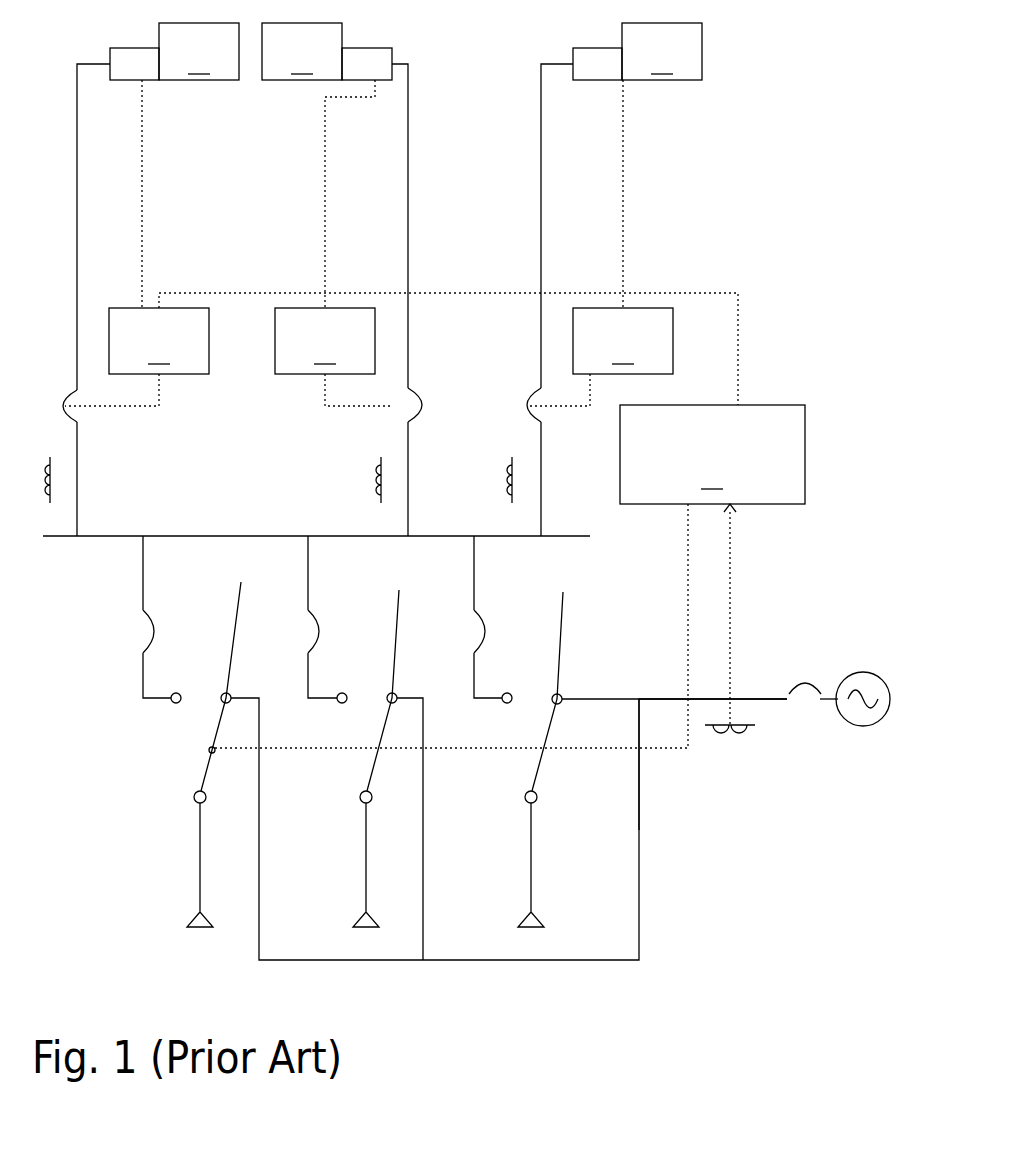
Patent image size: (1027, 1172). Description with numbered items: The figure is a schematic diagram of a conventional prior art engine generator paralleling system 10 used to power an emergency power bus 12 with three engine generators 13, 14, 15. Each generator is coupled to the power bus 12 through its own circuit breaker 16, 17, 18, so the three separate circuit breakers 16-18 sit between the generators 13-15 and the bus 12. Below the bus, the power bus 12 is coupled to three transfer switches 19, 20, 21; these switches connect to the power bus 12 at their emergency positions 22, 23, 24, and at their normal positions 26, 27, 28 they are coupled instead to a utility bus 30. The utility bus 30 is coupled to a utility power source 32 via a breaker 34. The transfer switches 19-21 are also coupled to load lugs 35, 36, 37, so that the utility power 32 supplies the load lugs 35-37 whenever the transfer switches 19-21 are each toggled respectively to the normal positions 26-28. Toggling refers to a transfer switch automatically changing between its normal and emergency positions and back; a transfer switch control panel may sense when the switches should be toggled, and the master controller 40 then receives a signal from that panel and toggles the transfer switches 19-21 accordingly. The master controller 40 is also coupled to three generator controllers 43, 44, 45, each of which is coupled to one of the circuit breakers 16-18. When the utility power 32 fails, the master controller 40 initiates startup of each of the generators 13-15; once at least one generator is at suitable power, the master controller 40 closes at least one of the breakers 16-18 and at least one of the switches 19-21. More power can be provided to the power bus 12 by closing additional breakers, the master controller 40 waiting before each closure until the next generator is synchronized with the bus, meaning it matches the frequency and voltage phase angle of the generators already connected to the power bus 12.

The engine generator paralleling system 10 is at (753, 44).
The emergency power bus 12 is at (155, 536).
The engine generator 13 is at (637, 51).
The engine generator 14 is at (327, 51).
The engine generator 15 is at (174, 51).
The circuit breaker 16 is at (527, 405).
The circuit breaker 17 is at (421, 408).
The circuit breaker 18 is at (68, 410).
The transfer switch 19 is at (550, 728).
The transfer switch 20 is at (383, 732).
The transfer switch 21 is at (218, 730).
The emergency position 22 is at (507, 693).
The emergency position 23 is at (343, 692).
The emergency position 24 is at (172, 692).
The normal position 26 is at (563, 596).
The normal position 27 is at (399, 592).
The normal position 28 is at (241, 584).
The utility bus 30 is at (640, 828).
The utility power source 32 is at (886, 713).
The breaker 34 is at (813, 698).
The load lug 35 is at (544, 927).
The load lug 36 is at (355, 927).
The load lug 37 is at (188, 927).
The master controller 40 is at (508, 576).
The generator controller 43 is at (600, 243).
The generator controller 44 is at (333, 243).
The generator controller 45 is at (137, 243).